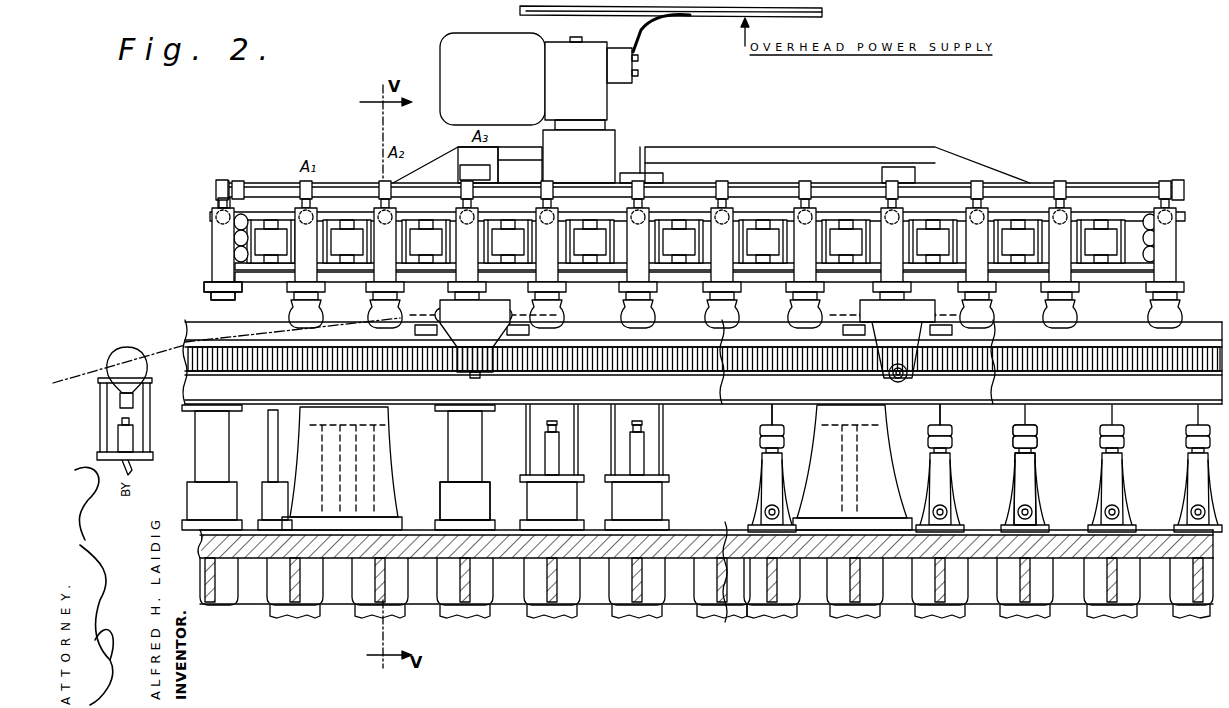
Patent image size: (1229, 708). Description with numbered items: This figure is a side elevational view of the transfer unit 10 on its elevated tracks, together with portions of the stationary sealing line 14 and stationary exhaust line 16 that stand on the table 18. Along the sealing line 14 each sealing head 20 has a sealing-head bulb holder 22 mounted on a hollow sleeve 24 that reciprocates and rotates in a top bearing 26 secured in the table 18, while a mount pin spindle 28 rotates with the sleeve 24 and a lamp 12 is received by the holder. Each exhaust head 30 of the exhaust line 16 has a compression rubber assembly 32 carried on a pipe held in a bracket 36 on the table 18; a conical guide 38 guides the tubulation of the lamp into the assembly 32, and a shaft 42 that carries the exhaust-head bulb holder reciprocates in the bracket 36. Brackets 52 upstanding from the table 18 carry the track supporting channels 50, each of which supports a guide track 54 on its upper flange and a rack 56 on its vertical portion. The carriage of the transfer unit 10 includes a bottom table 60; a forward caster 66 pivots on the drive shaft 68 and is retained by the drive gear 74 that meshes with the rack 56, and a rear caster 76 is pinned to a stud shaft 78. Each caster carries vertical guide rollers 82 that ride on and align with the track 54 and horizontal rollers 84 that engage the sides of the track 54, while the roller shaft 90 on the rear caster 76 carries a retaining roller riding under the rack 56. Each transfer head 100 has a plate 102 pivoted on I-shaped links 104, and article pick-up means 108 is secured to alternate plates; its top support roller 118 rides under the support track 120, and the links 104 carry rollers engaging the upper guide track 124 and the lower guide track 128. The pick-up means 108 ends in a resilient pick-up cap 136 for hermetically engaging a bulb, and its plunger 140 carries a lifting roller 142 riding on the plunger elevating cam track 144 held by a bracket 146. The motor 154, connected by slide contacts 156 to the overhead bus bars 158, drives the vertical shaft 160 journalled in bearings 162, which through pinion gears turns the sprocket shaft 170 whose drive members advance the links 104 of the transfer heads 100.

The transfer unit 10 is at (792, 132).
The lamp 12 is at (302, 326).
The sealing line 14 is at (665, 458).
The exhaust line 16 is at (758, 470).
The table 18 is at (682, 560).
The sealing head 20 is at (100, 383).
The sealing-head bulb holder 22 is at (100, 410).
The hollow sleeve 24 is at (205, 458).
The top bearing 26 is at (480, 505).
The mount pin spindle 28 is at (118, 440).
The exhaust head 30 is at (1008, 474).
The compression rubber assembly 32 is at (778, 430).
The bracket 36 is at (1040, 500).
The conical guide 38 is at (955, 428).
The shaft 42 is at (770, 412).
The track supporting channel 50 is at (262, 415).
The bracket 52 is at (295, 460).
The guide track 54 is at (190, 322).
The rack 56 is at (682, 368).
The bottom table 60 is at (283, 296).
The forward caster 66 is at (470, 365).
The drive shaft 68 is at (472, 168).
The drive gear 74 is at (488, 372).
The rear caster 76 is at (878, 372).
The stud shaft 78 is at (902, 166).
The vertical guide rollers 82 is at (512, 316).
The horizontal rollers 84 is at (415, 330).
The roller shaft 90 is at (912, 376).
The transfer head 100 is at (212, 228).
The plate 102 is at (245, 245).
The I-shaped link 104 is at (312, 212).
The article pick-up means 108 is at (213, 265).
The top support roller 118 is at (238, 210).
The support track 120 is at (975, 190).
The guide track 124 is at (268, 212).
The guide track 128 is at (262, 290).
The resilient pick-up cap 136 is at (206, 300).
The plunger 140 is at (216, 200).
The lifting roller 142 is at (222, 183).
The plunger elevating cam track 144 is at (423, 165).
The bracket 146 is at (500, 157).
The motor 154 is at (458, 45).
The slide contacts 156 is at (650, 24).
The overhead bus bars 158 is at (825, 14).
The vertical shaft 160 is at (577, 40).
The bearings 162 is at (598, 133).
The sprocket shaft 170 is at (645, 172).